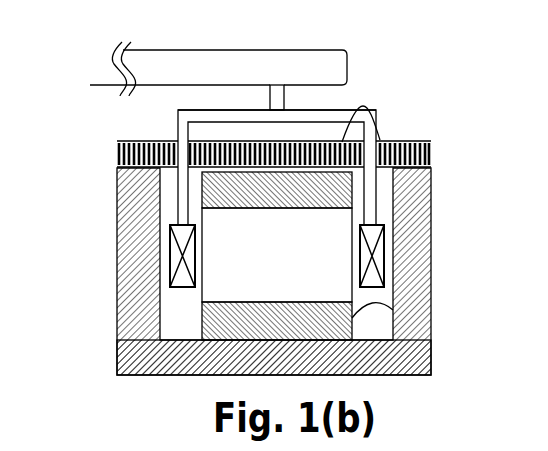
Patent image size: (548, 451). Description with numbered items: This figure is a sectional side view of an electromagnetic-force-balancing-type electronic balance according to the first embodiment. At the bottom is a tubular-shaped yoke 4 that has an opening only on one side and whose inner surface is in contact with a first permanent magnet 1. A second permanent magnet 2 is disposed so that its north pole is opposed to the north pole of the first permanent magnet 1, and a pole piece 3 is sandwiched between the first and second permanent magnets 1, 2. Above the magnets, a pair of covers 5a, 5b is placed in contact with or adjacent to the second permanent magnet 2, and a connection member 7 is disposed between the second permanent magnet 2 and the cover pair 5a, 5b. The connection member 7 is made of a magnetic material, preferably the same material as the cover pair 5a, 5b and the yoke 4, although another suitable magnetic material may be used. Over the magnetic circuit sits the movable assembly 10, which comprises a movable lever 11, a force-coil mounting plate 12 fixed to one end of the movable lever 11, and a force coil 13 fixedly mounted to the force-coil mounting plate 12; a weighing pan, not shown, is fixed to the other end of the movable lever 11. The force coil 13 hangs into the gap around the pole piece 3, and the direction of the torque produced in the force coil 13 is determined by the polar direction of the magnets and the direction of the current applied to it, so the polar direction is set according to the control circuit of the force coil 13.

The first permanent magnet 1 is at (412, 311).
The second permanent magnet 2 is at (203, 200).
The pole piece 3 is at (335, 226).
The yoke 4 is at (117, 341).
The cover 5a is at (288, 134).
The cover 5b is at (404, 140).
The connection member 7 is at (381, 137).
The movable assembly 10 is at (367, 44).
The movable lever 11 is at (145, 80).
The force-coil mounting plate 12 is at (177, 113).
The force coil 13 is at (172, 265).